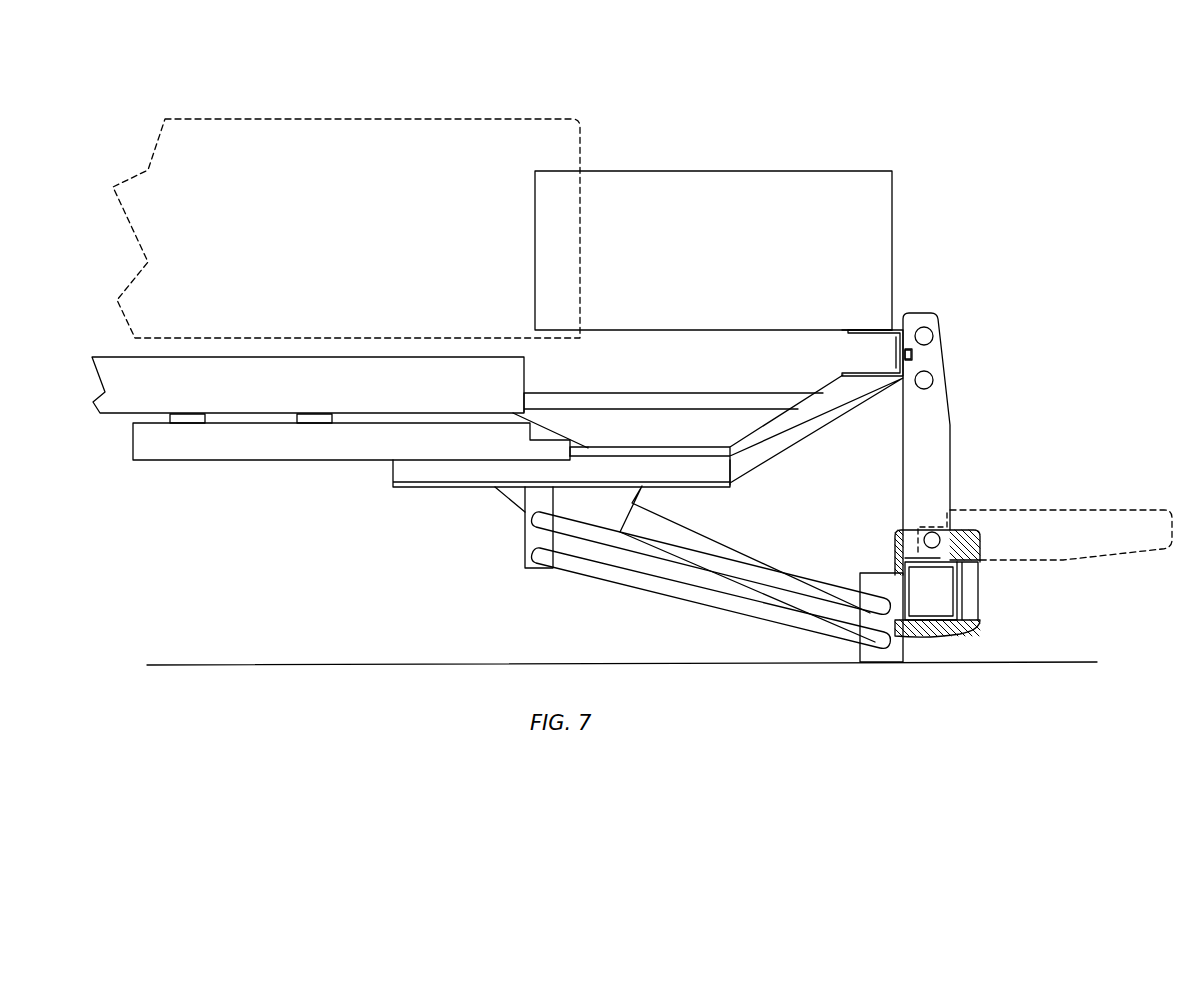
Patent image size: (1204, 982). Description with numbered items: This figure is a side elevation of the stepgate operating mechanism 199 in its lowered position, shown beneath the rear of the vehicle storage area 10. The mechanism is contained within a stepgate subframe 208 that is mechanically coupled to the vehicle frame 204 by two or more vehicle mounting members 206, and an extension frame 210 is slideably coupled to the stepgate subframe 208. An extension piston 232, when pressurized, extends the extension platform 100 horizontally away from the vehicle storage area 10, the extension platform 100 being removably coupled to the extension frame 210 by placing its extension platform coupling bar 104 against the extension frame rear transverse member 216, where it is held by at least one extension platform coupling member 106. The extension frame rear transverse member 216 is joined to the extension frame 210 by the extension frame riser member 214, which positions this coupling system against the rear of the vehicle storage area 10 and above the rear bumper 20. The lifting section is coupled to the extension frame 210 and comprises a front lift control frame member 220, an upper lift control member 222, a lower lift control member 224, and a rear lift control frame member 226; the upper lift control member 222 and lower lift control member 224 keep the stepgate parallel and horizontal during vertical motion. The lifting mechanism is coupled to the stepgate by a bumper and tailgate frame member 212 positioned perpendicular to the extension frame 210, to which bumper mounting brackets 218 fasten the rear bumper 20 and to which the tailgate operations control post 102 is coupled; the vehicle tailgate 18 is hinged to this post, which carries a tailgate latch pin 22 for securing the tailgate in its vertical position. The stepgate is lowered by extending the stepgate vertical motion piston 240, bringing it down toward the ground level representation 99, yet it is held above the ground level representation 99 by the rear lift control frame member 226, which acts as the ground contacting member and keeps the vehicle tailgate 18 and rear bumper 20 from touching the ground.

The vehicle storage area 10 is at (341, 126).
The vehicle tailgate 18 is at (1037, 538).
The rear bumper 20 is at (980, 543).
The tailgate latch pin 22 is at (926, 336).
The ground level representation 99 is at (345, 665).
The extension platform 100 is at (700, 207).
The tailgate operations control post 102 is at (945, 430).
The extension platform coupling bar 104 is at (877, 328).
The extension platform coupling member 106 is at (912, 352).
The stepgate operating mechanism 199 is at (218, 521).
The vehicle frame 204 is at (470, 382).
The vehicle mounting member 206 is at (320, 418).
The stepgate subframe 208 is at (250, 443).
The extension frame 210 is at (440, 473).
The bumper and tailgate frame member 212 is at (982, 620).
The extension frame riser member 214 is at (790, 425).
The extension frame rear transverse member 216 is at (843, 377).
The bumper mounting bracket 218 is at (972, 575).
The front lift control frame member 220 is at (535, 493).
The upper lift control member 222 is at (800, 580).
The lower lift control member 224 is at (630, 578).
The rear lift control frame member 226 is at (900, 652).
The extension piston 232 is at (673, 402).
The stepgate vertical motion piston 240 is at (723, 552).